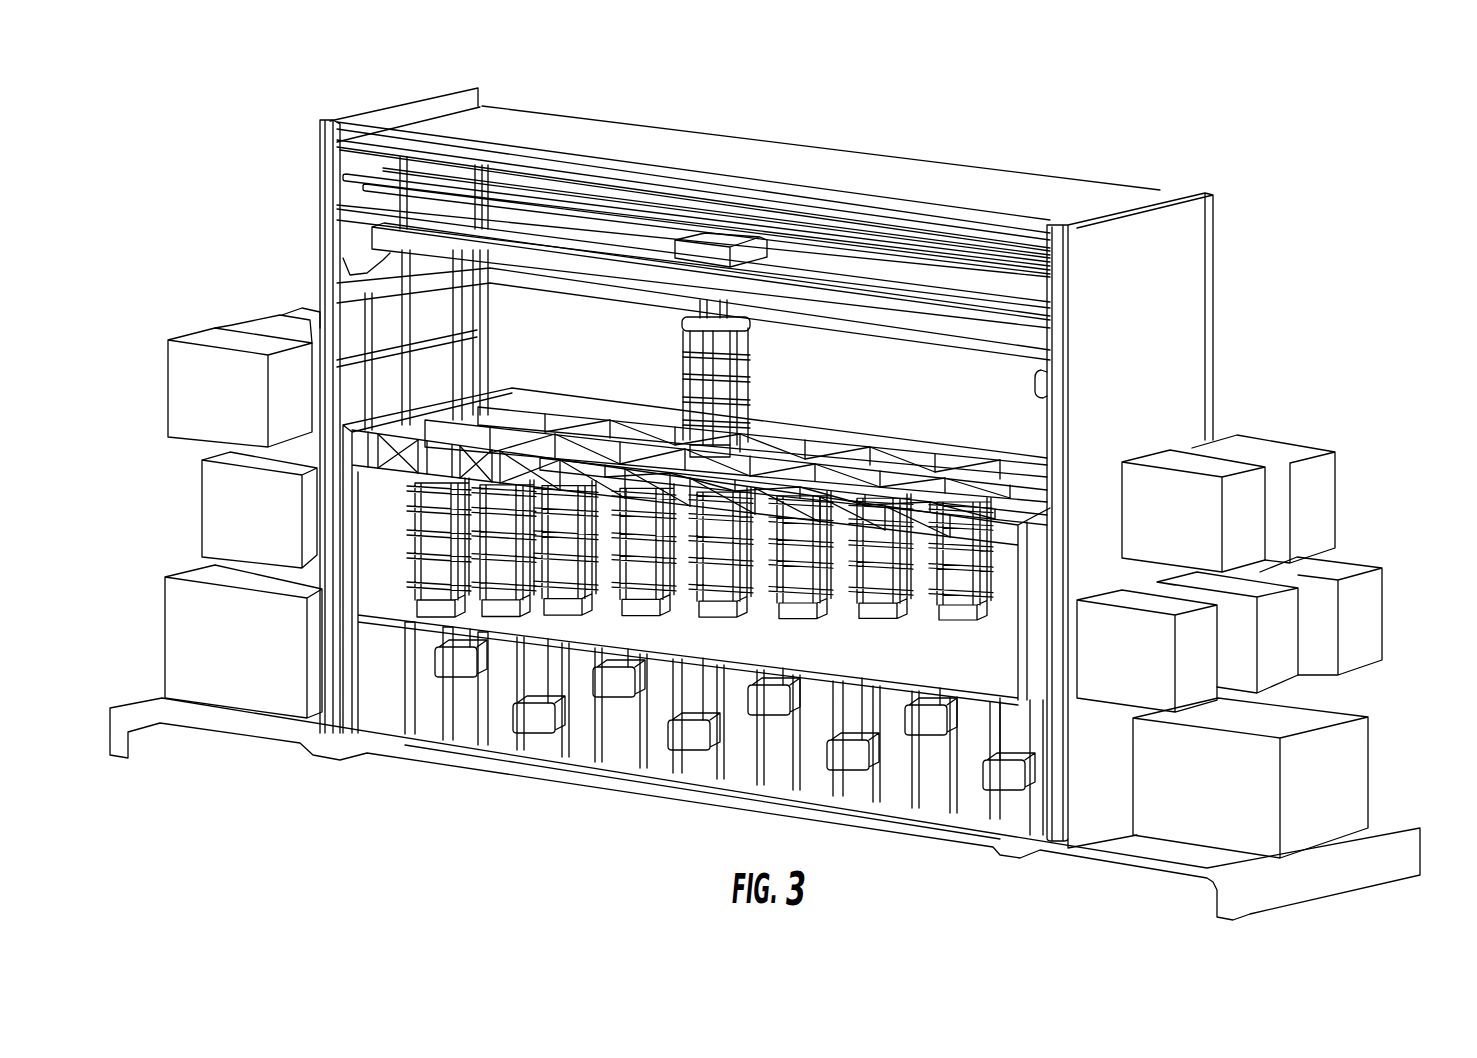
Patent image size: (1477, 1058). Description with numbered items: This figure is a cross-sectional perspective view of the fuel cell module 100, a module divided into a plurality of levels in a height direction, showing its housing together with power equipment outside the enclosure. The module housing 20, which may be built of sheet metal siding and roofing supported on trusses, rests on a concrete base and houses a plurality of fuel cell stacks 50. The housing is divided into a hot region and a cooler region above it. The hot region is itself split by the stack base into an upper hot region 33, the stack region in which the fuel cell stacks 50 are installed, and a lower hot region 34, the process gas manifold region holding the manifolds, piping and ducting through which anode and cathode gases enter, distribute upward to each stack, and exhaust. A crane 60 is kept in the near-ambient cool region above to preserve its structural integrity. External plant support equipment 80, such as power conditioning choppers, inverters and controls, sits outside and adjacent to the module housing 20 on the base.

The fuel cell module 100 is at (268, 107).
The module housing 20 is at (1168, 284).
The crane 60 is at (403, 223).
The fuel cell stacks 50 is at (742, 323).
The upper hot region 33 is at (404, 526).
The lower hot region 34 is at (417, 685).
The external plant support equipment 80 is at (1249, 753).